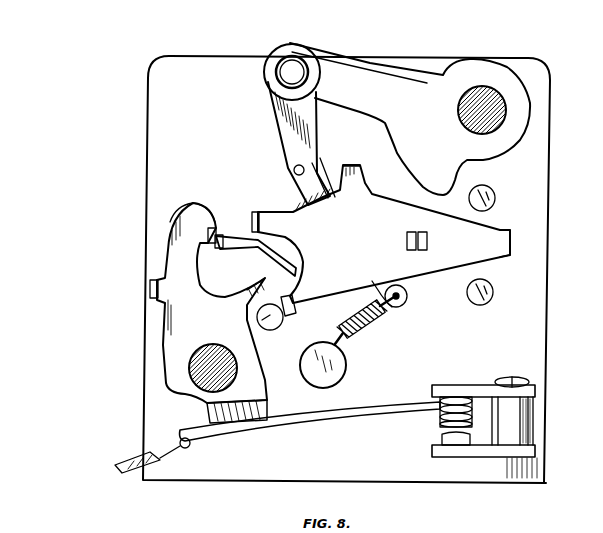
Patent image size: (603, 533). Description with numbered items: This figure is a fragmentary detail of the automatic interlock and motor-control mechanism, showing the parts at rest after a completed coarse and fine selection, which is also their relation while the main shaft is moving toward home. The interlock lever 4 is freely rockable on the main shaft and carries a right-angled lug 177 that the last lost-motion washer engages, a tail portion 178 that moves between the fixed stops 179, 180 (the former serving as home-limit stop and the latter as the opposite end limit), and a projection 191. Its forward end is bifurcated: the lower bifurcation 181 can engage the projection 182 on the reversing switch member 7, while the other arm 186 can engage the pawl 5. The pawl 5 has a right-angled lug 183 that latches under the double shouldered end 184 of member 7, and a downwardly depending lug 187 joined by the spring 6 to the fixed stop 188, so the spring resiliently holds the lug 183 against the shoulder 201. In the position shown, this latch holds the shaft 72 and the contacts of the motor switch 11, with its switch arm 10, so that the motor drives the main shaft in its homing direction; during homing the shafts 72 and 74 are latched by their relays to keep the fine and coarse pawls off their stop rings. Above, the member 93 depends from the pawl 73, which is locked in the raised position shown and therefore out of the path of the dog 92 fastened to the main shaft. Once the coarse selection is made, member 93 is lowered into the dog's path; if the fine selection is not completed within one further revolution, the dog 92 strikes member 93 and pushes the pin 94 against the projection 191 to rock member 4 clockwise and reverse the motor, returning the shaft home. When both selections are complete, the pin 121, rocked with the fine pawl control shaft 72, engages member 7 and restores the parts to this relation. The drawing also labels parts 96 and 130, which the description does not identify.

The interlock lever 4 is at (455, 232).
The pawl 5 is at (250, 255).
The spring 6 is at (368, 339).
The reversing switch member 7 is at (172, 341).
The switch arm 10 is at (348, 417).
The motor switch 11 is at (487, 380).
The fine pawl control shaft 72 is at (213, 375).
The pawl 73 is at (392, 60).
The coarse pawl control shaft 74 is at (490, 110).
The dog 92 is at (324, 178).
The depending member 93 is at (285, 142).
The pin 94 is at (293, 170).
The nut 96 is at (440, 405).
The pin 121 is at (274, 330).
The tab 130 is at (150, 290).
The right-angled lug 177 is at (414, 230).
The tail portion 178 is at (511, 246).
The fixed stop 179 is at (496, 198).
The fixed stop 180 is at (494, 294).
The lower bifurcation 181 is at (293, 312).
The projection 182 is at (270, 284).
The right-angled lug 183 is at (222, 234).
The double shouldered end 184 is at (194, 207).
The bifurcated arm 186 is at (255, 211).
The depending lug 187 is at (404, 303).
The fixed stop 188 is at (344, 377).
The projection 191 is at (395, 168).
The shoulder 201 is at (213, 227).